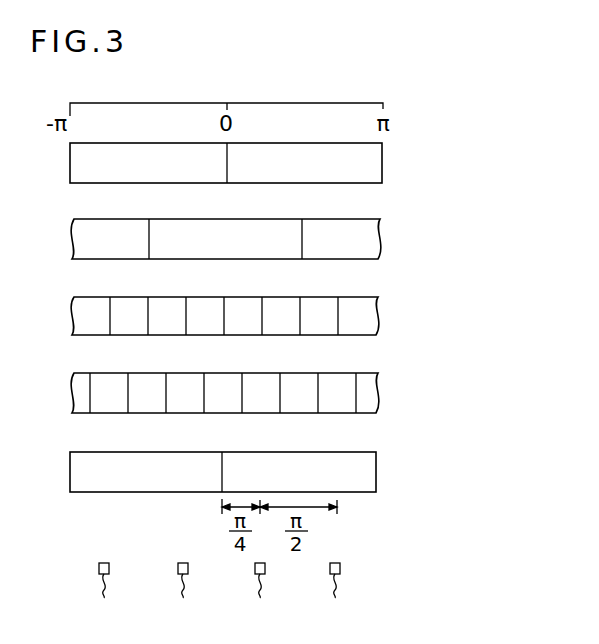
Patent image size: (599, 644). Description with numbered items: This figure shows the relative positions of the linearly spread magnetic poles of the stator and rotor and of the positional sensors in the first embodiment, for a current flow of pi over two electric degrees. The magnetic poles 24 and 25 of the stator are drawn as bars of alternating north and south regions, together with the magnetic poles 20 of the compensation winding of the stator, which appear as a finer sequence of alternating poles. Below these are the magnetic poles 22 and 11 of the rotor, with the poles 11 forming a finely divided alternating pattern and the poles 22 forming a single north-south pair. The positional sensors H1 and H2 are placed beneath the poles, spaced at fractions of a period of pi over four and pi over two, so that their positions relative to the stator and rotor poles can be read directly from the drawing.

The magnetic pole 24 is at (383, 162).
The magnetic pole 25 is at (380, 238).
The magnetic poles of the compensation winding 20 is at (378, 314).
The magnetic poles of the rotor 11 is at (378, 390).
The magnetic poles of the rotor 22 is at (376, 468).
The positional sensor H1 is at (182, 596).
The positional sensor H2 is at (259, 596).